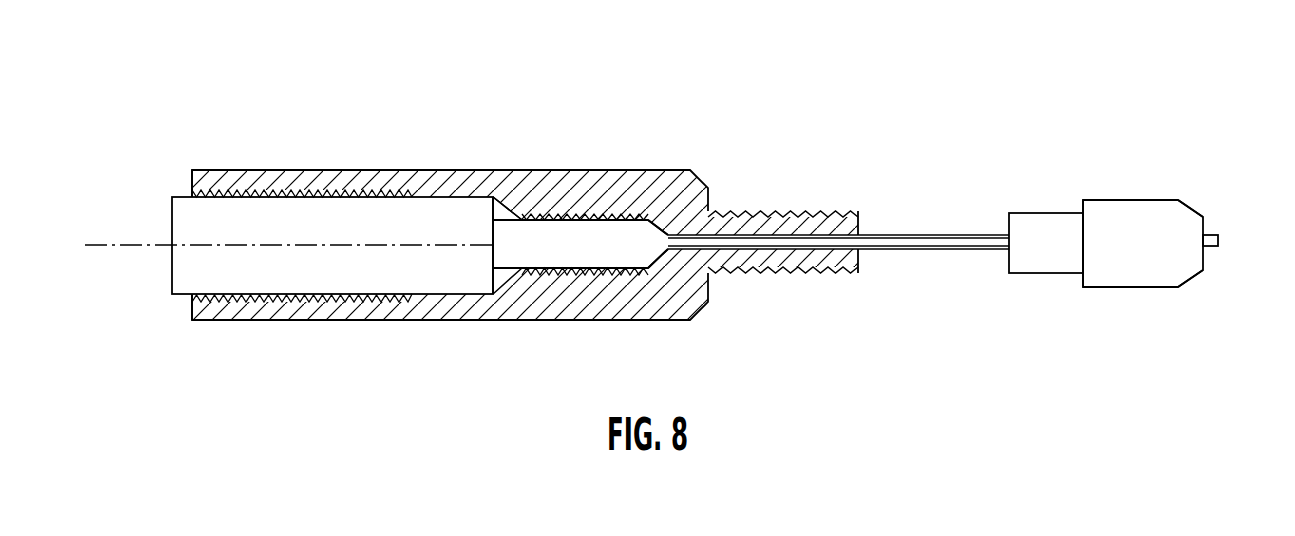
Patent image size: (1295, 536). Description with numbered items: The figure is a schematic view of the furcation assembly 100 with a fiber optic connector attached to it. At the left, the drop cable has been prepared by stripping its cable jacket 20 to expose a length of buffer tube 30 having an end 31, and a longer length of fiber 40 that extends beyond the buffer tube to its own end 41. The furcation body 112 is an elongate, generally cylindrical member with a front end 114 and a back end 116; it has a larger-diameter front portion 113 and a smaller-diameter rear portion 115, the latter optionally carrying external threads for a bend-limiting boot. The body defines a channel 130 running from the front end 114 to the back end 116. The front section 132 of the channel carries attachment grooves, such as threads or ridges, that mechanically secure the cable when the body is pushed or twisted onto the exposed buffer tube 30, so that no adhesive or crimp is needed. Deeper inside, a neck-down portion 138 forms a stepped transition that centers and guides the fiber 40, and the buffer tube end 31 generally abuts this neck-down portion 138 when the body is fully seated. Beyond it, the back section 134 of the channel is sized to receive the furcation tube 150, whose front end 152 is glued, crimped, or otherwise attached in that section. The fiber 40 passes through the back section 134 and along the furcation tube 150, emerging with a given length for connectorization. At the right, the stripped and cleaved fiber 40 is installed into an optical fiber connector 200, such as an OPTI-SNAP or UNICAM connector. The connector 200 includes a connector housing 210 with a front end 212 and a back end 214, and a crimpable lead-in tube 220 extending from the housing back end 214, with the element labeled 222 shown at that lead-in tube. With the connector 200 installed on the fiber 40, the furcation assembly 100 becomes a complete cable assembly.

The furcation assembly 100 is at (851, 90).
The cable jacket 20 is at (172, 200).
The buffer tube 30 is at (573, 250).
The end 31 is at (508, 203).
The fiber 40 is at (888, 234).
The end 41 is at (1220, 243).
The furcation body 112 is at (636, 178).
The front portion 113 is at (219, 166).
The front end 114 is at (191, 176).
The rear portion 115 is at (599, 158).
The back end 116 is at (718, 274).
The channel 130 is at (421, 294).
The front section 132 is at (246, 301).
The back section 134 is at (622, 269).
The neck-down portion 138 is at (511, 285).
The furcation tube 150 is at (742, 210).
The front end 152 is at (493, 203).
The optical fiber connector 200 is at (1114, 181).
The connector housing 210 is at (1130, 279).
The front end 212 is at (1205, 222).
The back end 214 is at (1082, 208).
The crimpable lead-in tube 220 is at (1030, 213).
The sleeve end 222 is at (1006, 258).